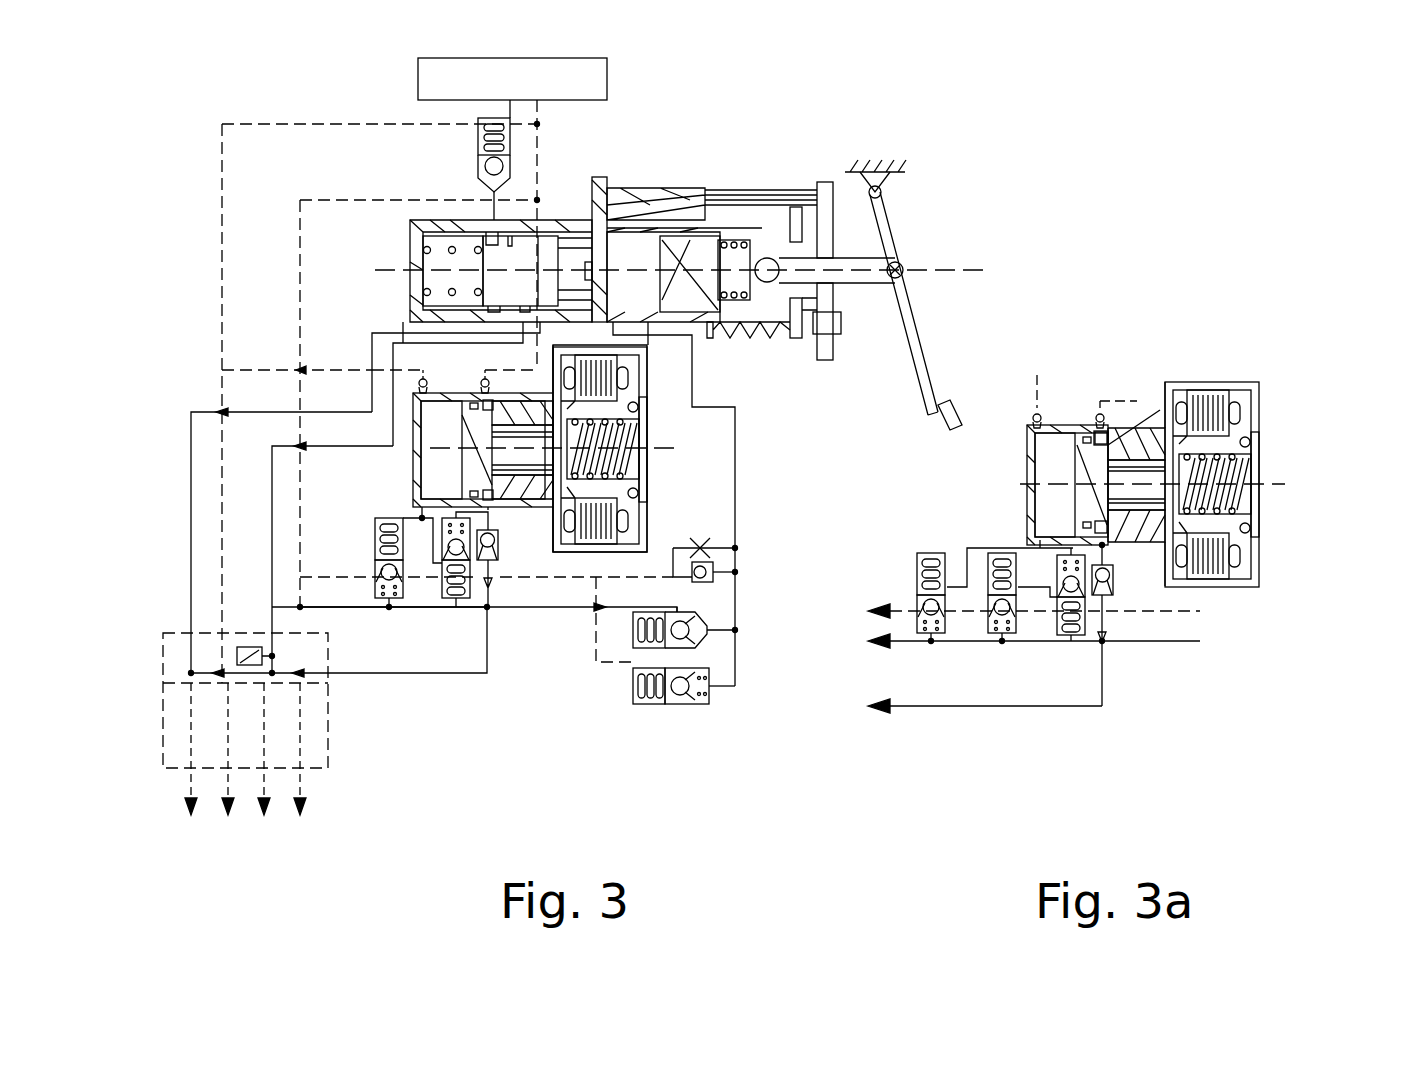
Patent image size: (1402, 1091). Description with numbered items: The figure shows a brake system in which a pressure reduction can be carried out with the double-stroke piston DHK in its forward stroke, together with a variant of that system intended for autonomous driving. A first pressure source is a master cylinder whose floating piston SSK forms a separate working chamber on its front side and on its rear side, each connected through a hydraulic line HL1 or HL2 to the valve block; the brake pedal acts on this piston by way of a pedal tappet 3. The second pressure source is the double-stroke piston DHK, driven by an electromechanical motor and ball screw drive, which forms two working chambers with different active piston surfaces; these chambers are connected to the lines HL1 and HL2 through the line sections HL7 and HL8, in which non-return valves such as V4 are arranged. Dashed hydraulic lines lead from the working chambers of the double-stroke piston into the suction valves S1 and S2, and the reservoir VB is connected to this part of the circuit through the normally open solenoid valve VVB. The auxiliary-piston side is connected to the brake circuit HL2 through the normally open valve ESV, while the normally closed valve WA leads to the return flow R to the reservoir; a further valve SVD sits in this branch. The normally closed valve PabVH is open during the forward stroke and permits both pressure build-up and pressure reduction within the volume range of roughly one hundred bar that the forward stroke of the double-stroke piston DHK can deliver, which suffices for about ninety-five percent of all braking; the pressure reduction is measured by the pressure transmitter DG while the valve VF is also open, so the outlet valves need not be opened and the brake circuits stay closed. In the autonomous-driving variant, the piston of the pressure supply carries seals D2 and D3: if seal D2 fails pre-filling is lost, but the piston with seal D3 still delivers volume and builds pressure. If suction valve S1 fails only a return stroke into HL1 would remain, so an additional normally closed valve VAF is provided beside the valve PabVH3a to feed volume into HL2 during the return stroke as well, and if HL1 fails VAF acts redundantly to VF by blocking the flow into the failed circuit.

In FIG. 3, the reservoir VB is at (512, 79).
In FIG. 3, the normally open solenoid valve VVB is at (478, 138).
In FIG. 3, the SK piston SSK is at (410, 220).
In FIG. 3, the pedal tappet 3 is at (642, 262).
In FIG. 3, the non-return valve or suction valve S1 is at (418, 383).
In FIG. 3A, the non-return valve or suction valve S1 is at (1032, 412).
In FIG. 3, the non-return valve or suction valve S2 is at (480, 380).
In FIG. 3A, the non-return valve or suction valve S2 is at (1100, 408).
In FIG. 3, the double-stroke piston DHK is at (487, 495).
In FIG. 3A, the double-stroke piston DHK is at (1085, 500).
In FIG. 3, the hydraulic line or brake circuit section HL1 is at (191, 510).
In FIG. 3A, the hydraulic line or brake circuit section HL1 is at (958, 708).
In FIG. 3, the hydraulic line or brake circuit section HL2 is at (272, 525).
In FIG. 3A, the hydraulic line or brake circuit section HL2 is at (955, 643).
In FIG. 3, the normally closed solenoid valve PabVH is at (375, 540).
In FIG. 3, the normally closed solenoid valve VF is at (447, 608).
In FIG. 3A, the normally closed solenoid valve VF is at (1062, 645).
In FIG. 3, the non-return valve or pressure relief valve V4 is at (498, 545).
In FIG. 3A, the non-return valve or pressure relief valve V4 is at (1113, 585).
In FIG. 3, the solenoid valve / throttle SVD is at (718, 578).
In FIG. 3, the normally open solenoid valve ESV is at (705, 633).
In FIG. 3, the normally closed solenoid valve WA is at (700, 704).
In FIG. 3, the pressure transmitter DG is at (250, 647).
In FIG. 3, the hydraulic line or brake circuit section HL7 is at (345, 607).
In FIG. 3, the hydraulic line or brake circuit section HL8 is at (335, 673).
In FIG. 3A, the seal D2 is at (1093, 432).
In FIG. 3A, the seal D3 is at (1150, 420).
In FIG. 3A, the normally closed solenoid valve PabVH3a is at (917, 560).
In FIG. 3A, the normally closed solenoid valve VAF is at (988, 560).
In FIG. 3A, the return flow to reservoir R is at (1185, 611).